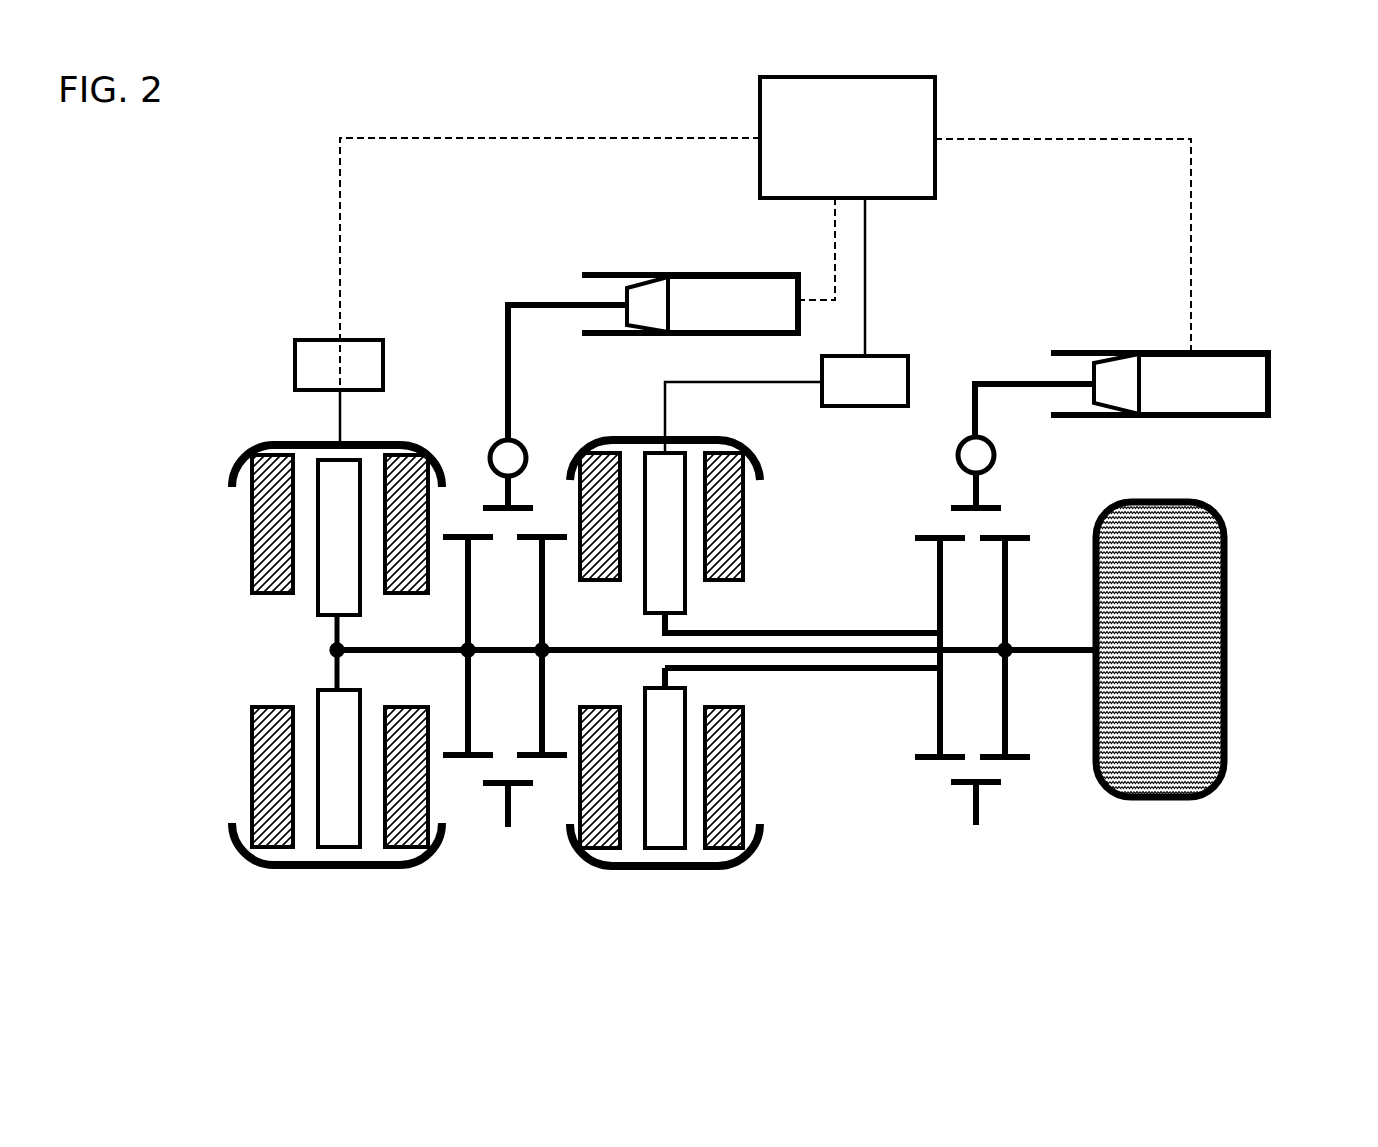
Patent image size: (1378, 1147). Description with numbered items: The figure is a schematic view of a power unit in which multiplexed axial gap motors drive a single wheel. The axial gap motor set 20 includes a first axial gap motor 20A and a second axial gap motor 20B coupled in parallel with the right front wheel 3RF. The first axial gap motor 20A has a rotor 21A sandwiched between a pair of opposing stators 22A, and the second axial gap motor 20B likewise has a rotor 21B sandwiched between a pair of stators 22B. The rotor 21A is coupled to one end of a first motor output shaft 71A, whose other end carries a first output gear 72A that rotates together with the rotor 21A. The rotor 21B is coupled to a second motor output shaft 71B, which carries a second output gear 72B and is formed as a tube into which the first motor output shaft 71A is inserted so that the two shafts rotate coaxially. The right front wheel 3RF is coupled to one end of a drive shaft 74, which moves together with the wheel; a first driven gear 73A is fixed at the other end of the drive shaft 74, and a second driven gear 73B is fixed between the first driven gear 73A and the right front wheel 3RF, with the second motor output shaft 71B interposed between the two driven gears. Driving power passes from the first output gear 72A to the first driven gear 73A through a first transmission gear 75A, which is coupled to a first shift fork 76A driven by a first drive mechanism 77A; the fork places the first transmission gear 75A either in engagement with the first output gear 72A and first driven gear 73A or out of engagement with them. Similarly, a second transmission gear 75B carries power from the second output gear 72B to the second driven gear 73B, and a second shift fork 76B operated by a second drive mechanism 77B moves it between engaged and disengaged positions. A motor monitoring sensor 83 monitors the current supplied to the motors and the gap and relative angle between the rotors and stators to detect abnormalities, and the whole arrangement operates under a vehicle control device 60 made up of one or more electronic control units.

The vehicle control device 60 is at (935, 105).
The motor monitoring sensor 83 is at (305, 340).
The axial gap motor set 20 is at (536, 640).
The first axial gap motor 20A is at (297, 631).
The second axial gap motor 20B is at (755, 694).
The rotor 21A is at (337, 833).
The rotor 21B is at (688, 850).
The stators 22A is at (257, 862).
The stators 22B is at (768, 460).
The first motor output shaft 71A is at (368, 648).
The second motor output shaft 71B is at (834, 630).
The first output gear 72A is at (452, 535).
The second output gear 72B is at (922, 760).
The first driven gear 73A is at (552, 757).
The second driven gear 73B is at (1020, 760).
The drive shaft 74 is at (815, 668).
The first transmission gear 75A is at (484, 613).
The second transmission gear 75B is at (1130, 709).
The first shift fork 76A is at (490, 440).
The second shift fork 76B is at (955, 435).
The first drive mechanism 77A is at (720, 298).
The second drive mechanism 77B is at (1235, 365).
The right front wheel 3RF is at (1205, 695).